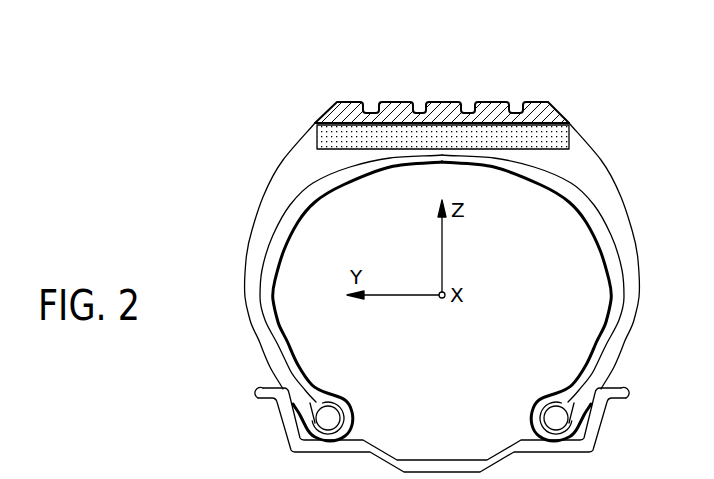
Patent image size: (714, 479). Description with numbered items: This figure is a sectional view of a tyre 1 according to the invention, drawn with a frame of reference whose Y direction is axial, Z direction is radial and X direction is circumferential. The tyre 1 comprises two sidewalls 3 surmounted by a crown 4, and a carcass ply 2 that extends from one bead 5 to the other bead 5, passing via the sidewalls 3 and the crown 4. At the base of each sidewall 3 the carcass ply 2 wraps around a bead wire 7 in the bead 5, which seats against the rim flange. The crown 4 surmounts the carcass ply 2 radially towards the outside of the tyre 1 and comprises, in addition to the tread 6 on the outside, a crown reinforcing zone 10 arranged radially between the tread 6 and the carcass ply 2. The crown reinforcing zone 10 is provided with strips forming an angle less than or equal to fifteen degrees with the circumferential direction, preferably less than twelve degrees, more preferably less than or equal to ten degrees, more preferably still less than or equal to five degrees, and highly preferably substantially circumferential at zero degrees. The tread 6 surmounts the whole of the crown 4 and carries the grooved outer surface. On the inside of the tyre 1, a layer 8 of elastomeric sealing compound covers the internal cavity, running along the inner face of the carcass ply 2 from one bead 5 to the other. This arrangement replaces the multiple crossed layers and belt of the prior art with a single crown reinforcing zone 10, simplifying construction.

The tyre 1 is at (247, 159).
The carcass ply 2 is at (260, 278).
The sidewall 3 is at (623, 254).
The crown 4 is at (380, 99).
The bead 5 is at (264, 342).
The tread 6 is at (490, 108).
The bead wire 7 is at (553, 417).
The layer of elastomeric sealing compound 8 is at (279, 246).
The crown reinforcing zone 10 is at (547, 138).